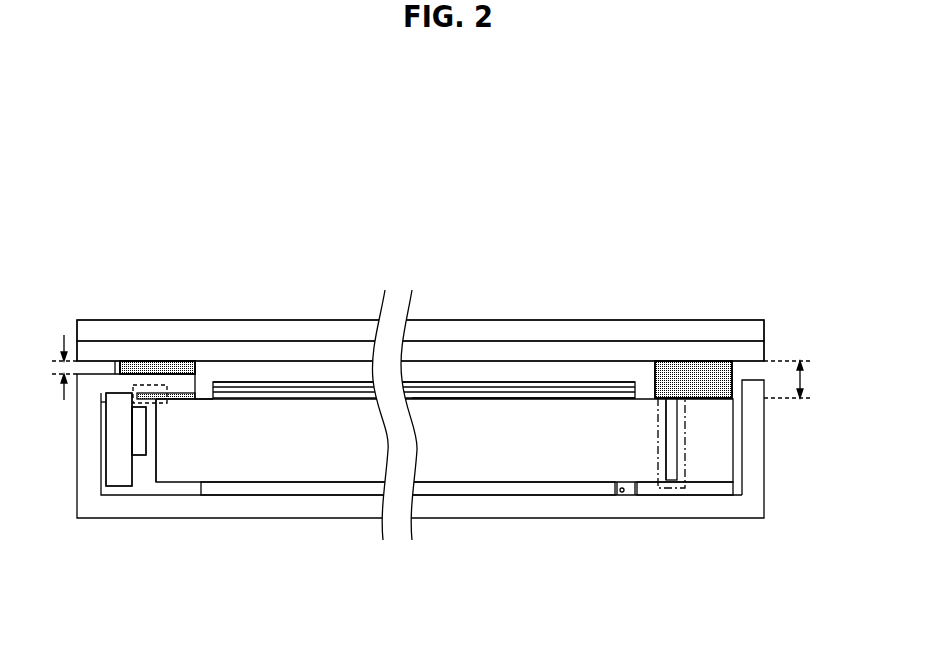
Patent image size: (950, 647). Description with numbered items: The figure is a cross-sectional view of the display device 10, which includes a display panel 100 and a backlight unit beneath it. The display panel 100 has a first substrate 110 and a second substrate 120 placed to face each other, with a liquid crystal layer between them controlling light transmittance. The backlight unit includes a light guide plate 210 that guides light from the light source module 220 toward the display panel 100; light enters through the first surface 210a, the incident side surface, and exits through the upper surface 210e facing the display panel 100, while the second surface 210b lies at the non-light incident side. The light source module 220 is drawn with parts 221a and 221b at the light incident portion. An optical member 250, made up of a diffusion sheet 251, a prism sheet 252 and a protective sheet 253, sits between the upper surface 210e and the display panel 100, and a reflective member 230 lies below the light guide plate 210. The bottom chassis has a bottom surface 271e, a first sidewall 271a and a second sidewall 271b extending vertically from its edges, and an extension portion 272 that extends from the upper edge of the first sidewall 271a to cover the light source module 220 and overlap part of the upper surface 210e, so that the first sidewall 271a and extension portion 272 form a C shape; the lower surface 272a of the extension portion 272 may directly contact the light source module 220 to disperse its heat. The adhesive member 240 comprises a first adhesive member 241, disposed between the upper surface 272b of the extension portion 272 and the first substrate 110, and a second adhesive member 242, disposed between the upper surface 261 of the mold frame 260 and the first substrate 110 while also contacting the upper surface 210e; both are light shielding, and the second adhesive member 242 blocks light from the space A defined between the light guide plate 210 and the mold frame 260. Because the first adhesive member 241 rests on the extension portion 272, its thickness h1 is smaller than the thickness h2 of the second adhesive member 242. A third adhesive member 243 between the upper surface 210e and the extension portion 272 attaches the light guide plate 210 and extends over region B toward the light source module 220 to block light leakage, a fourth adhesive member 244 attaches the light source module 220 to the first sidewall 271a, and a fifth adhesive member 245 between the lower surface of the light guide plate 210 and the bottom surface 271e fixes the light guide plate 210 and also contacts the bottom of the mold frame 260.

The display device 10 is at (116, 144).
The display panel 100 is at (829, 298).
The first substrate 110 is at (755, 348).
The second substrate 120 is at (755, 333).
The light guide plate 210 is at (230, 470).
The first surface 210a is at (157, 432).
The second surface 210b is at (664, 423).
The upper surface 210e is at (498, 398).
The light source module 220 is at (178, 576).
The first hinge part 221a is at (138, 455).
The second hinge part 221b is at (115, 486).
The reflective member 230 is at (307, 493).
The adhesive member 240 is at (410, 136).
The first adhesive member 241 is at (190, 370).
The second adhesive member 242 is at (690, 377).
The third adhesive member 243 is at (184, 395).
The fourth adhesive member 244 is at (101, 463).
The fifth adhesive member 245 is at (697, 496).
The optical member 250 is at (565, 236).
The diffusion sheet 251 is at (477, 383).
The prism sheet 252 is at (517, 390).
The protective sheet 253 is at (542, 397).
The mold frame 260 is at (718, 477).
The upper surface of the mold frame 261 is at (707, 396).
The first sidewall 271a is at (77, 447).
The second sidewall 271b is at (765, 442).
The bottom surface 271e is at (622, 496).
The extension portion 272 is at (123, 254).
The lower surface of the extension portion 272a is at (110, 392).
The upper surface of the extension portion 272b is at (117, 372).
The space A is at (683, 460).
The region B is at (162, 380).
The thickness of the first adhesive member h1 is at (52, 367).
The thickness of the second adhesive member h2 is at (796, 379).